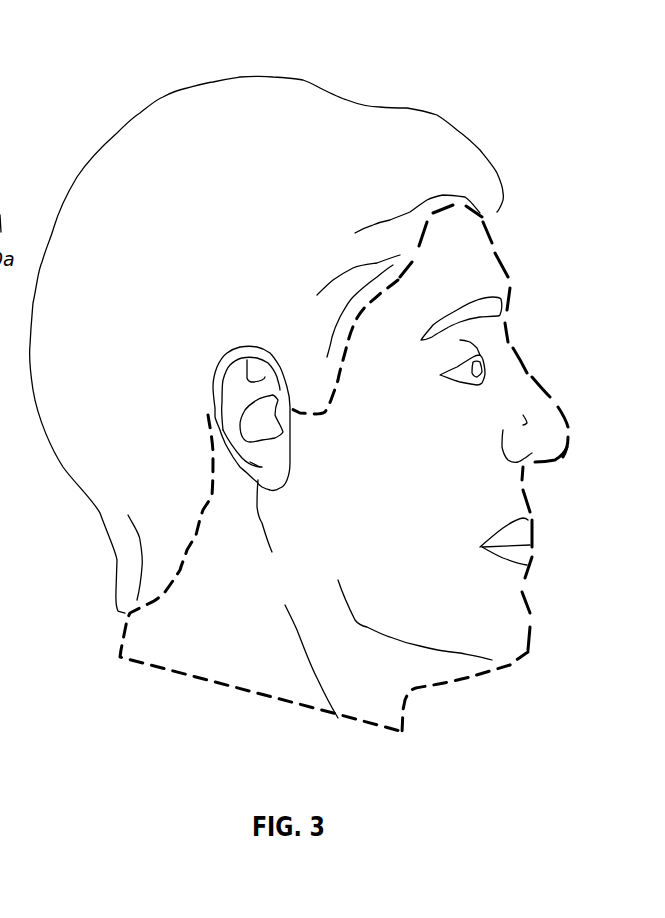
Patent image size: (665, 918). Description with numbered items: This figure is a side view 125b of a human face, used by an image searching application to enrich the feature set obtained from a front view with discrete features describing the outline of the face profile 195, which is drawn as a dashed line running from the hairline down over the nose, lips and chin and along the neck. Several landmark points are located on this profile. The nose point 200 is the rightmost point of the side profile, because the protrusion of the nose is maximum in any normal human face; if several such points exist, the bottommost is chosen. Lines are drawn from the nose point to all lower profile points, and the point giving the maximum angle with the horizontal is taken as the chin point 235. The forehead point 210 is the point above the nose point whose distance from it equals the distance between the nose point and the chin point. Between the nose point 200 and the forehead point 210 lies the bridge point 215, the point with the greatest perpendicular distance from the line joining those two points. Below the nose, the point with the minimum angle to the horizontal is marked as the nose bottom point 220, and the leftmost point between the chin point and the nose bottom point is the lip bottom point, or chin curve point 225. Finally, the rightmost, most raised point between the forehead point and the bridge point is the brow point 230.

The side view 125b is at (108, 105).
The face profile 195 is at (197, 537).
The nose point 200 is at (567, 417).
The forehead point 210 is at (490, 233).
The bridge point 215 is at (505, 330).
The nose bottom point 220 is at (537, 460).
The chin curve point 225 is at (485, 547).
The brow point 230 is at (510, 277).
The chin point 235 is at (527, 650).